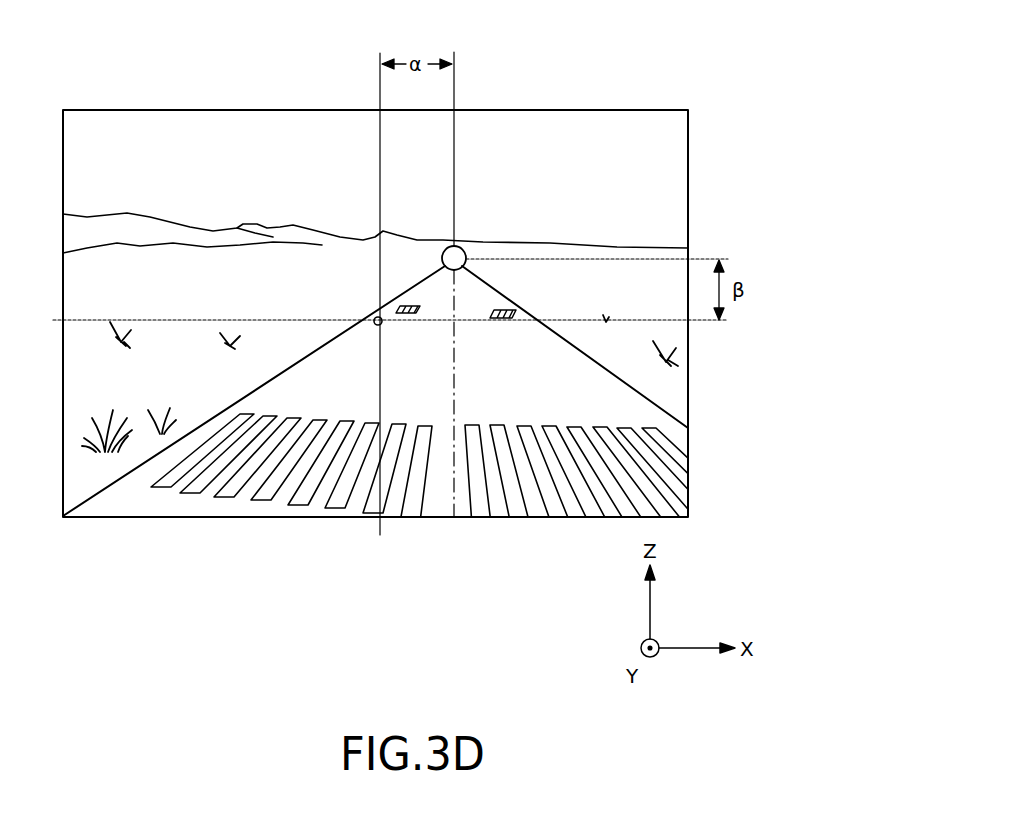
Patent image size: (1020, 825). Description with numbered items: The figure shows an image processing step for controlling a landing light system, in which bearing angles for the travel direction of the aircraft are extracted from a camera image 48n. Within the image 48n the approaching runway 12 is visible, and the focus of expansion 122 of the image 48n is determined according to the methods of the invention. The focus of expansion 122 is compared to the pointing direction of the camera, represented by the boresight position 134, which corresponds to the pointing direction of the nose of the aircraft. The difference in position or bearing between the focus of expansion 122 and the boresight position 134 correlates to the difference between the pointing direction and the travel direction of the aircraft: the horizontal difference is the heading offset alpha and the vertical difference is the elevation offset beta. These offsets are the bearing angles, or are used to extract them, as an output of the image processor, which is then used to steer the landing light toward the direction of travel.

The image 48n is at (713, 167).
The runway 12 is at (551, 393).
The focus of expansion 122 is at (462, 247).
The boresight position 134 is at (366, 327).